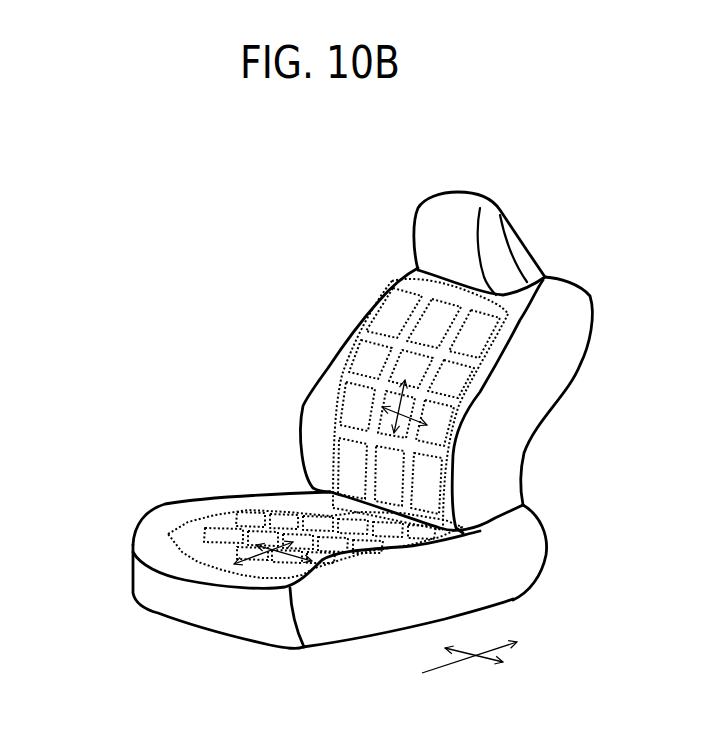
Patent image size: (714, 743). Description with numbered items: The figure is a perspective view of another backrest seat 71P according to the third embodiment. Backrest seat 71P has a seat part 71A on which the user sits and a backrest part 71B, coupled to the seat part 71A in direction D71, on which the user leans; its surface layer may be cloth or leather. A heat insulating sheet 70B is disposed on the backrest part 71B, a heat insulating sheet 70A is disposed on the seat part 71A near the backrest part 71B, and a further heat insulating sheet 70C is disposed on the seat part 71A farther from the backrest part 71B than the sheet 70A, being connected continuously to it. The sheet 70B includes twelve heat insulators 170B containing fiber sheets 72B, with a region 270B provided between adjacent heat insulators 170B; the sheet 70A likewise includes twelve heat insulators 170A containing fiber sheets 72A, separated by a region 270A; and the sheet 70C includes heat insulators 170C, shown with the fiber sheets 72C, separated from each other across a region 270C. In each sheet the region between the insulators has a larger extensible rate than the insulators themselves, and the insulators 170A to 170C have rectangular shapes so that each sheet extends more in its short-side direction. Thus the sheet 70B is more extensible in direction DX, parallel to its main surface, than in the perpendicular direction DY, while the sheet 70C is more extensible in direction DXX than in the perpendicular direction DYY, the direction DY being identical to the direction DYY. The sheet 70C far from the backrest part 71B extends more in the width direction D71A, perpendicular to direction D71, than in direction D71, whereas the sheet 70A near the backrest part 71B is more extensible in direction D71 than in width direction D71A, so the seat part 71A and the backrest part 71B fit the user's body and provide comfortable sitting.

The backrest seat 71P is at (586, 232).
The backrest part 71B is at (533, 387).
The seat part 71A is at (508, 562).
The heat insulating sheet 70B is at (431, 393).
The heat insulating sheet 70A is at (298, 549).
The heat insulating sheet 70C is at (274, 549).
The heat insulators 170B is at (440, 393).
The fiber sheets 72B is at (489, 395).
The heat insulators 170A is at (344, 524).
The fiber sheets 72A is at (377, 575).
The heat insulators 170C is at (182, 560).
The seat cushion front heater wire 72C is at (237, 595).
The region 270B is at (395, 339).
The region 270A is at (338, 528).
The region 270C is at (240, 536).
The direction DX is at (400, 430).
The direction DY is at (430, 423).
The direction DXX is at (236, 567).
The direction DYY is at (298, 562).
The direction D71 is at (478, 657).
The width direction D71A is at (478, 657).